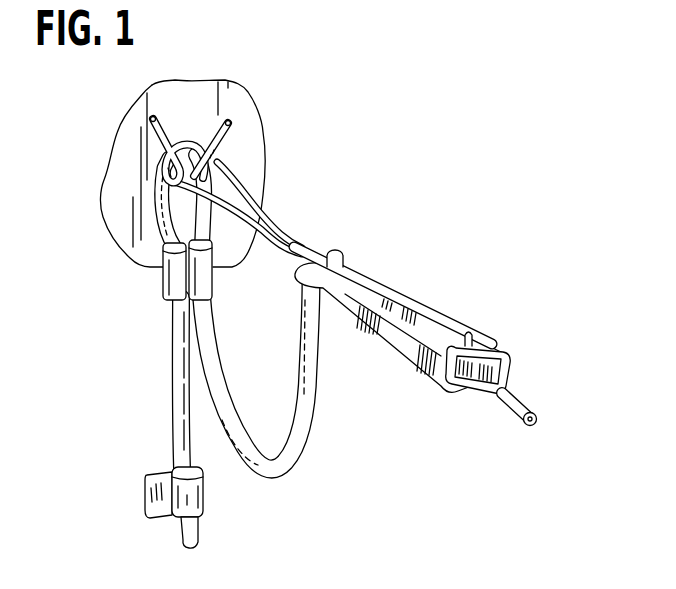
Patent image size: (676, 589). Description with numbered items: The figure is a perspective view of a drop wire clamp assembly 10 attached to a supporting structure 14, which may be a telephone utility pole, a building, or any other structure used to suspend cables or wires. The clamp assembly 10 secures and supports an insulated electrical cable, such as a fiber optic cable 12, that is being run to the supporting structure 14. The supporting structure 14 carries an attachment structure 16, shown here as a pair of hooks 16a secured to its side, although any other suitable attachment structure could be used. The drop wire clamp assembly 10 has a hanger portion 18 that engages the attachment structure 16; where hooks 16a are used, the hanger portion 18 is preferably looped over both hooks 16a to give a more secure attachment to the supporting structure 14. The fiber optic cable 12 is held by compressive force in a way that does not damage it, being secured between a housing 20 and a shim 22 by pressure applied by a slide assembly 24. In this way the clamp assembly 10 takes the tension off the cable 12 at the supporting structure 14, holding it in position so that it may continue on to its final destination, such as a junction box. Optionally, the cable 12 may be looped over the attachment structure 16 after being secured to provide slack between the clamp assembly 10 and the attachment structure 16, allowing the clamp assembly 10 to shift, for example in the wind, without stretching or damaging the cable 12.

The drop wire clamp assembly 10 is at (473, 267).
The fiber optic cable 12 is at (537, 410).
The supporting structure 14 is at (227, 80).
The attachment structure 16 is at (215, 145).
The hooks 16a is at (155, 116).
The hanger portion 18 is at (281, 235).
The housing 20 is at (408, 347).
The shim 22 is at (338, 251).
The slide assembly 24 is at (503, 353).